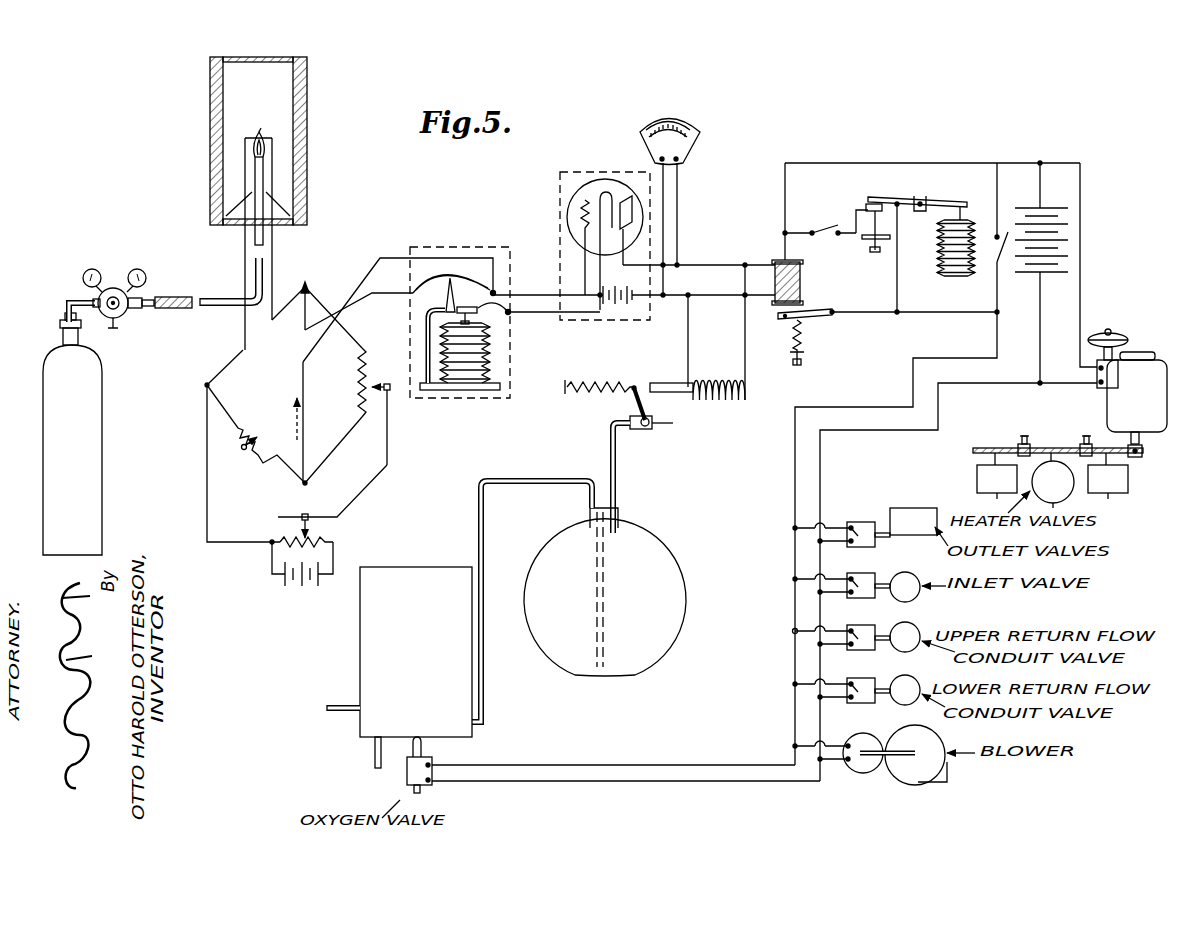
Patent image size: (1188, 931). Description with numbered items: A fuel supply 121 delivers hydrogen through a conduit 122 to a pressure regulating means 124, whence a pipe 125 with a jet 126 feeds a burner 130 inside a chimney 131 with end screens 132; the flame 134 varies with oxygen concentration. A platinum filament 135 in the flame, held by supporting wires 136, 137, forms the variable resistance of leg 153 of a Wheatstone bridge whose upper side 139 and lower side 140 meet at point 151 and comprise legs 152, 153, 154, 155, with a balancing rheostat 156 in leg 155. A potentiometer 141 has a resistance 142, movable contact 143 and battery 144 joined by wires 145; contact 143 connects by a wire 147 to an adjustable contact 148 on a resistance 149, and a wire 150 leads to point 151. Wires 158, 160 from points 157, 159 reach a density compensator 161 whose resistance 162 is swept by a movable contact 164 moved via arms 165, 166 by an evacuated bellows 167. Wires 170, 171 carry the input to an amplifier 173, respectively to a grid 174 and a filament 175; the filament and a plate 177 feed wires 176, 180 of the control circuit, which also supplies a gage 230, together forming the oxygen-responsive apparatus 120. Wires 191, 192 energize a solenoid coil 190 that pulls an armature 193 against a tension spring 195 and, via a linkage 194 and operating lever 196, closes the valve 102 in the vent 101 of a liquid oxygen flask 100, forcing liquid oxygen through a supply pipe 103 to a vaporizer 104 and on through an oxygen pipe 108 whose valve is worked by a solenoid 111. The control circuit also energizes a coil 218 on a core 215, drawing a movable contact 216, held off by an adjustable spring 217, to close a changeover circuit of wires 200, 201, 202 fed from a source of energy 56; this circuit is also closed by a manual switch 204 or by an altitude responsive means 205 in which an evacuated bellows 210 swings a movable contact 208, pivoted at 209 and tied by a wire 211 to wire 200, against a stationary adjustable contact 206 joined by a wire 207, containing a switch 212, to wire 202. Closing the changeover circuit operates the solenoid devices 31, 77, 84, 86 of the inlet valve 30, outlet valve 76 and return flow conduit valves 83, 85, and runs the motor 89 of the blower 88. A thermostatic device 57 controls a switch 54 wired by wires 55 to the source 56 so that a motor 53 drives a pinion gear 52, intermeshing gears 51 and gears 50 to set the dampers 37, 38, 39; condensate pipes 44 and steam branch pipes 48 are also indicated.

The oxygen concentration sensitive apparatus 120 is at (158, 252).
The fuel supply 121 is at (93, 489).
The conduit 122 is at (67, 310).
The pressure regulating means 124 is at (114, 320).
The pipe 125 is at (148, 306).
The jet 126 is at (169, 297).
The burner 130 is at (256, 172).
The chimney 131 is at (300, 152).
The screens 132 is at (270, 58).
The flame 134 is at (258, 134).
The filament 135 is at (264, 142).
The supporting wire 136 is at (244, 152).
The supporting wire 137 is at (273, 170).
The upper side 139 is at (352, 336).
The lower side 140 is at (341, 453).
The potentiometer 141 is at (314, 532).
The resistance 142 is at (283, 540).
The movable contact 143 is at (303, 514).
The energizing battery 144 is at (299, 586).
The wires 145 is at (271, 565).
The wire 147 is at (361, 493).
The adjustable contact 148 is at (390, 392).
The resistance 149 is at (360, 405).
The wire 150 is at (206, 497).
The point 151 is at (206, 387).
The leg 152 is at (359, 330).
The leg 153 is at (237, 356).
The leg 154 is at (334, 458).
The leg 155 is at (280, 476).
The rheostat 156 is at (257, 432).
The point 157 is at (317, 305).
The wire 158 is at (357, 282).
The point 159 is at (308, 483).
The wire 160 is at (441, 322).
The density compensator 161 is at (499, 290).
The resistance 162 is at (452, 276).
The movable contact 164 is at (444, 304).
The arm 165 is at (478, 311).
The arm 166 is at (467, 318).
The evacuated bellows 167 is at (483, 356).
The wire 170 is at (634, 288).
The wire 171 is at (550, 310).
The amplifier 173 is at (573, 194).
The grid 174 is at (579, 215).
The filament 175 is at (605, 194).
The wire 176 is at (674, 300).
The plate 177 is at (631, 200).
The wire 180 is at (680, 265).
The solenoid coil 190 is at (731, 402).
The wire 191 is at (687, 364).
The wire 192 is at (746, 363).
The armature 193 is at (670, 393).
The linkage 194 is at (646, 385).
The tension spring 195 is at (591, 385).
The operating lever 196 is at (632, 399).
The wire 200 is at (858, 408).
The wire 201 is at (836, 430).
The wire 202 is at (895, 158).
The manually operable switch 204 is at (999, 254).
The altitude responsive means 205 is at (862, 205).
The stationary adjustable contact 206 is at (881, 212).
The wire 207 is at (855, 213).
The movable contact 208 is at (870, 198).
The pivot 209 is at (922, 200).
The evacuated bellows 210 is at (937, 259).
The wire 211 is at (896, 285).
The manually operable switch 212 is at (824, 236).
The core 215 is at (801, 315).
The movable contact 216 is at (806, 318).
The adjustable spring 217 is at (795, 339).
The coil 218 is at (799, 283).
The gage 230 is at (686, 152).
The inlet valve 30 is at (900, 578).
The solenoid device 31 is at (860, 580).
The damper 37 is at (977, 482).
The damper 38 is at (1128, 484).
The damper 39 is at (1063, 490).
The condensate pipes 44 is at (374, 750).
The branch pipes 48 is at (344, 708).
The gears 50 is at (990, 451).
The intermeshing gears 51 is at (1022, 444).
The pinion gear 52 is at (1138, 457).
The motor 53 is at (1109, 401).
The switch 54 is at (1113, 372).
The wires 55 is at (1079, 326).
The source of energy 56 is at (1055, 209).
The thermostatic device 57 is at (1109, 330).
The outlet valve 76 is at (902, 512).
The solenoid device 77 is at (860, 527).
The upper return flow conduit valve 83 is at (898, 630).
The solenoid device 84 is at (861, 633).
The lower return flow conduit valve 85 is at (898, 682).
The solenoid device 86 is at (862, 686).
The blower 88 is at (920, 766).
The motor 89 is at (862, 771).
The liquid oxygen flask 100 is at (656, 652).
The vent 101 is at (610, 448).
The valve 102 is at (647, 432).
The supply pipe 103 is at (553, 481).
The oxygen vaporizer 104 is at (375, 665).
The oxygen pipe 108 is at (423, 791).
The solenoid 111 is at (407, 773).